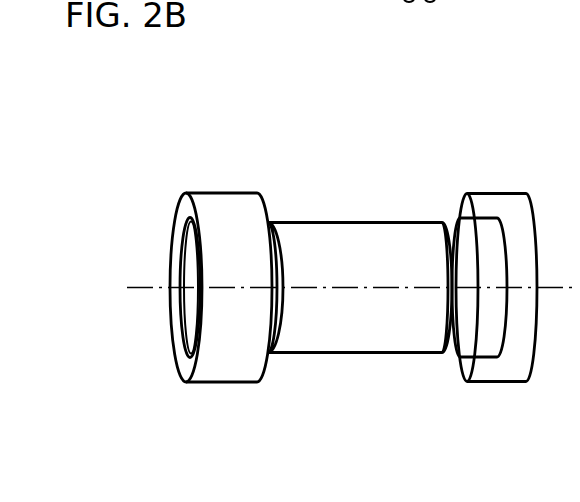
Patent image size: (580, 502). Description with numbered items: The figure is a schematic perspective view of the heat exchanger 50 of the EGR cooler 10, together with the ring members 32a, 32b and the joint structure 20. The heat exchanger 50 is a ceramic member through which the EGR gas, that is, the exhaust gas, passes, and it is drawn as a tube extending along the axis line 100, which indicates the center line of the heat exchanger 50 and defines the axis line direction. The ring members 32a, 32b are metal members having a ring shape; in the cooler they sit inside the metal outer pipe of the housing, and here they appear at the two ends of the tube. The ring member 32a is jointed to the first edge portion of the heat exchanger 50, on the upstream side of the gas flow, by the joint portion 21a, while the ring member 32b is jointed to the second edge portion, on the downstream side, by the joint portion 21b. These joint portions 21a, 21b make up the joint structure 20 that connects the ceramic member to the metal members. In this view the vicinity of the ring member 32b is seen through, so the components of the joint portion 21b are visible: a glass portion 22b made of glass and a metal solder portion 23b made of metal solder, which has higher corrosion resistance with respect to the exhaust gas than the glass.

The EGR cooler 10 is at (148, 162).
The axis line 100 is at (152, 287).
The ring member 32a is at (227, 193).
The ring member 32b is at (503, 193).
The heat exchanger 50 is at (302, 222).
The joint structure 20 is at (442, 441).
The joint portion 21a is at (281, 351).
The joint portion 21b is at (449, 355).
The glass portion 22b is at (447, 218).
The metal solder portion 23b is at (480, 218).